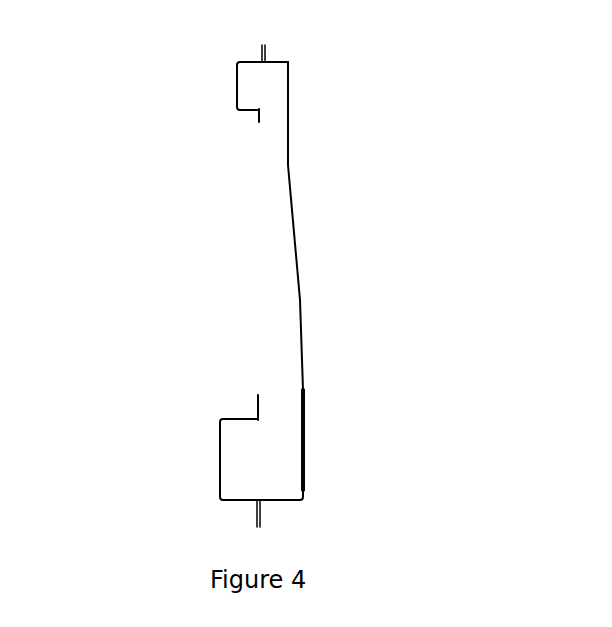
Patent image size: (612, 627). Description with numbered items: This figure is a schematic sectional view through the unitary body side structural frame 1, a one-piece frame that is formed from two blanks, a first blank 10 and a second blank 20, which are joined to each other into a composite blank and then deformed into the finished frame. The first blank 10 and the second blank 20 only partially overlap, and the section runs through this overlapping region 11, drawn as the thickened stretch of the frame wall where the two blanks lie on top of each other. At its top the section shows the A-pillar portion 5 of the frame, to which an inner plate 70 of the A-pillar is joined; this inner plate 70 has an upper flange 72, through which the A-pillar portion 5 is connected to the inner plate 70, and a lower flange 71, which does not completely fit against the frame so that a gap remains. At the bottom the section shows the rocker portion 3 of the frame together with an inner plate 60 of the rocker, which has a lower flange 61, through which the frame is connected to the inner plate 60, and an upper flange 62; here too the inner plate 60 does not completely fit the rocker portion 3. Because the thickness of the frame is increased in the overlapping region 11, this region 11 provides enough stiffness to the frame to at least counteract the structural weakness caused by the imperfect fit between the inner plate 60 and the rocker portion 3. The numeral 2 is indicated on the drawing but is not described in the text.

The unitary body side structural frame 1 is at (287, 286).
The first profile part 2 is at (278, 204).
The rocker portion 3 is at (281, 461).
The A-pillar portion 5 is at (246, 79).
The first blank 10 is at (303, 320).
The overlapping region 11 is at (305, 445).
The second blank 20 is at (280, 503).
The inner plate of the rocker 60 is at (218, 440).
The lower flange 61 is at (255, 515).
The upper flange 62 is at (255, 403).
The inner plate of the A-pillar 70 is at (237, 75).
The lower flange 71 is at (258, 122).
The upper flange 72 is at (261, 55).